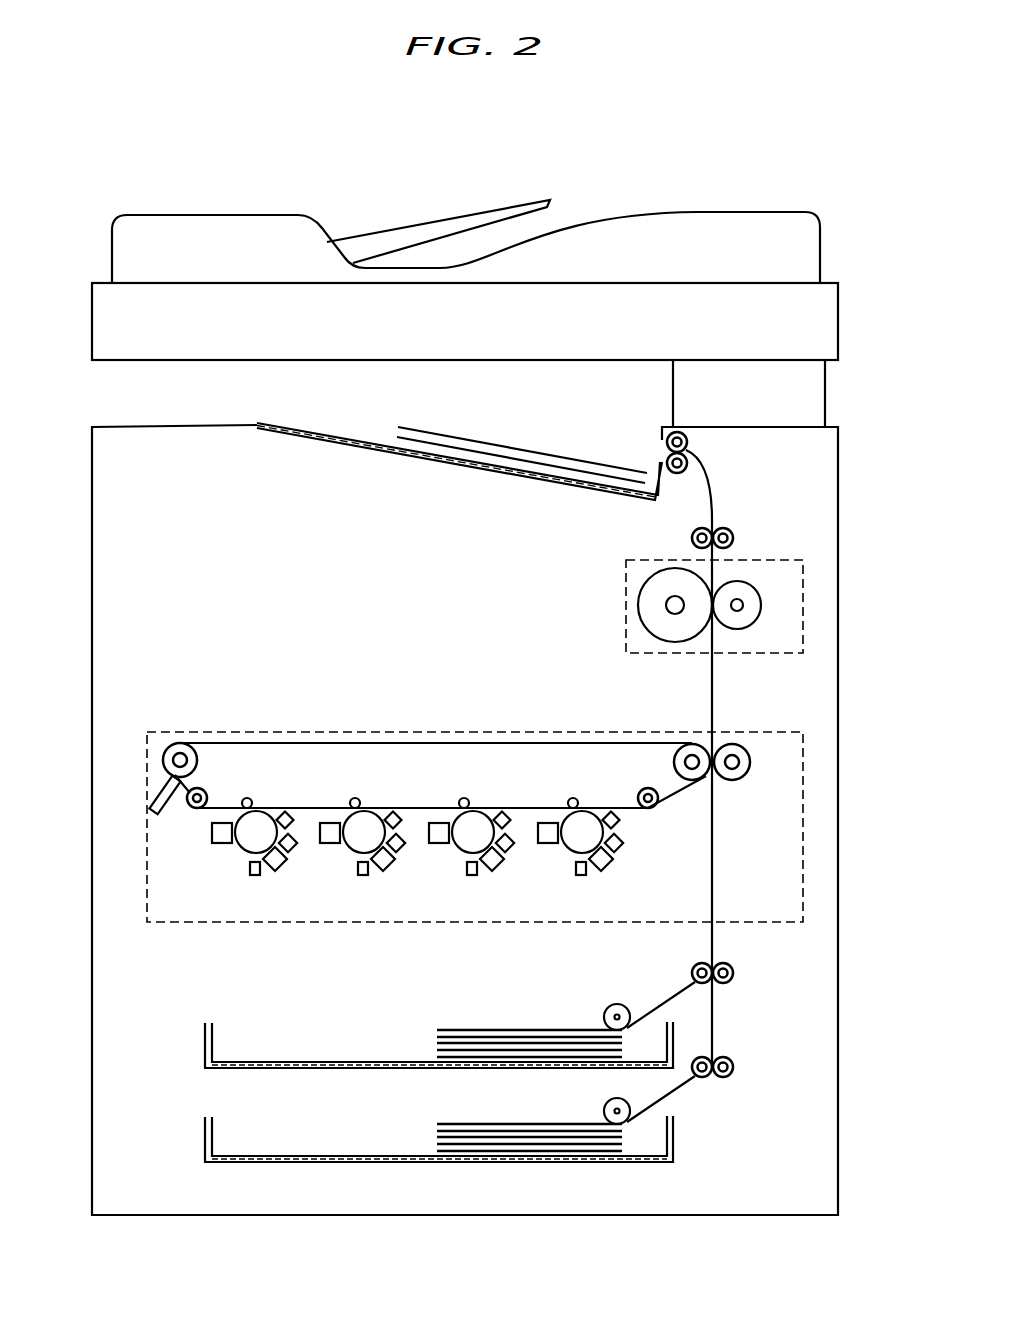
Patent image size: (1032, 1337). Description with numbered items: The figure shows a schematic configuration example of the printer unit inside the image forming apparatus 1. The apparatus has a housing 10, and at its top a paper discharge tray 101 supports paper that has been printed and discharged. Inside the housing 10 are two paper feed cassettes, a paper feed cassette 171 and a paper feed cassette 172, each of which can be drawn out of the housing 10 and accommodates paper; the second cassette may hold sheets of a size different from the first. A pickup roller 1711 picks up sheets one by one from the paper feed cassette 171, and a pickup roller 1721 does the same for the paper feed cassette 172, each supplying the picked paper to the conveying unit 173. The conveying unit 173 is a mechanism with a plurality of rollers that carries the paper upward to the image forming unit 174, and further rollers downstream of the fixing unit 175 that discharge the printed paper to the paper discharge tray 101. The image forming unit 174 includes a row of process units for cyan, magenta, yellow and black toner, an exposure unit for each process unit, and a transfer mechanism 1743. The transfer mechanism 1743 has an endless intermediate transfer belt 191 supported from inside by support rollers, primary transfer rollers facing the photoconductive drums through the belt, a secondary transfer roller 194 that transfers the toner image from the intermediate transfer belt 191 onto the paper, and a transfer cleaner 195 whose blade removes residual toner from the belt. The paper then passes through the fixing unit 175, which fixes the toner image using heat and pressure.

The image forming apparatus 1 is at (480, 168).
The housing 10 is at (92, 437).
The paper discharge tray 101 is at (347, 437).
The paper feed cassette 171 is at (203, 1040).
The pickup roller 1711 is at (603, 1013).
The paper feed cassette 172 is at (203, 1136).
The pickup roller 1721 is at (607, 1102).
The conveying unit 173 is at (742, 1008).
The image forming unit 174 is at (587, 732).
The transfer mechanism 1743 is at (731, 798).
The fixing unit 175 is at (660, 560).
The intermediate transfer belt 191 is at (368, 741).
The secondary transfer roller 194 is at (748, 776).
The transfer cleaner 195 is at (153, 797).